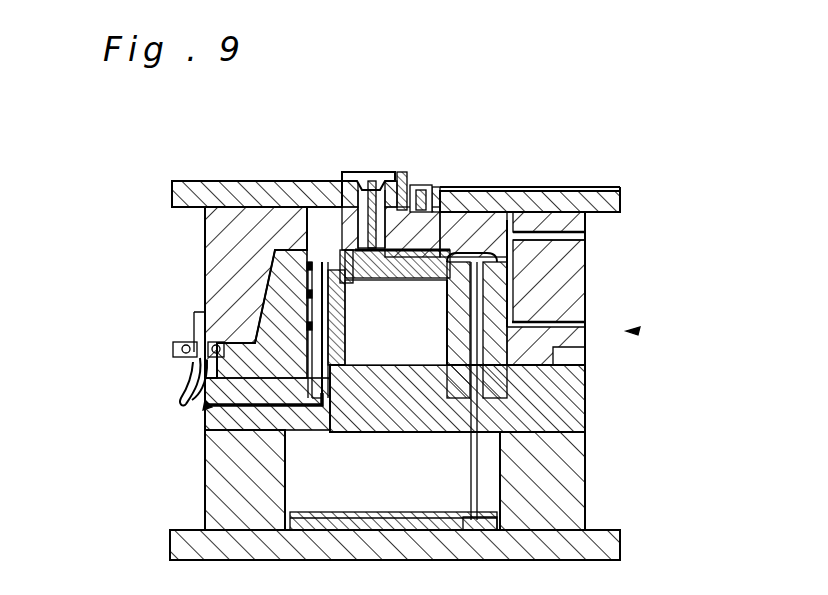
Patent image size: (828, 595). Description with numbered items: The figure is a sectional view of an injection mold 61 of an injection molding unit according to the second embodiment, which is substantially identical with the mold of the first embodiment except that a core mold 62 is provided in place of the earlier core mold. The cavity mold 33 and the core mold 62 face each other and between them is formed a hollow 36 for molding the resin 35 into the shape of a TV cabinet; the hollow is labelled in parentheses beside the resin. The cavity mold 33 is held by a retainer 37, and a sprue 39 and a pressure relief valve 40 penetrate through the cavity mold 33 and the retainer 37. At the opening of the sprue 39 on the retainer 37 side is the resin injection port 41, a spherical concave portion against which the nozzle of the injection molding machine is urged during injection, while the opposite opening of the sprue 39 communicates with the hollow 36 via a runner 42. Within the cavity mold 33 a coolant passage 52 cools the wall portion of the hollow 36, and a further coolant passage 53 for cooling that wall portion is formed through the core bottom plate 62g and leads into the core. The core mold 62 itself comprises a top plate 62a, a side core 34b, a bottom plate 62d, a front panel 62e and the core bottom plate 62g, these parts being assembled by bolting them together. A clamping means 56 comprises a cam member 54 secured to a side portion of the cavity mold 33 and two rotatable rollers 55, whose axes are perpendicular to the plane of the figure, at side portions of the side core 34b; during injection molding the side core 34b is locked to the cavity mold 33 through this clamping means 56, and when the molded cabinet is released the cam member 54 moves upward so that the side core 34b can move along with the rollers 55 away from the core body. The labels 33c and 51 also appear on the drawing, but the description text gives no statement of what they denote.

The cavity mold 33 is at (598, 263).
The frame portion 33c is at (228, 243).
The side core 34b is at (272, 300).
The resin 35 is at (305, 272).
The hollow 36 is at (309, 294).
The retainer 37 is at (602, 200).
The sprue 39 is at (401, 175).
The pressure relief valve 40 is at (425, 185).
The resin injection port 41 is at (366, 170).
The runner 42 is at (355, 243).
The shim 51 is at (468, 192).
The coolant passage 52 is at (567, 233).
The coolant passage 53 is at (205, 407).
The cam member 54 is at (196, 322).
The rotatable rollers 55 is at (182, 356).
The clamping means 56 is at (160, 345).
The injection mold 61 is at (636, 333).
The core mold 62 is at (430, 322).
The top plate 62a is at (453, 297).
The bottom plate 62d is at (328, 332).
The front panel 62e is at (395, 280).
The core bottom plate 62g is at (568, 398).